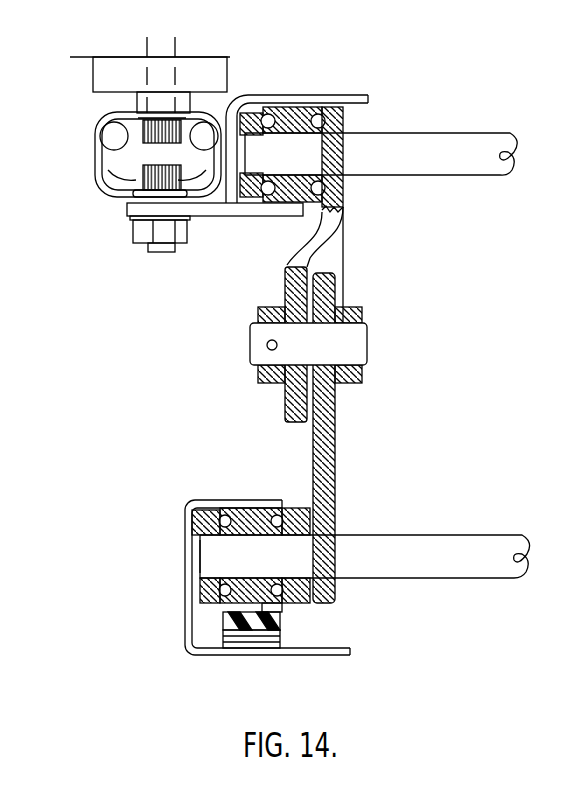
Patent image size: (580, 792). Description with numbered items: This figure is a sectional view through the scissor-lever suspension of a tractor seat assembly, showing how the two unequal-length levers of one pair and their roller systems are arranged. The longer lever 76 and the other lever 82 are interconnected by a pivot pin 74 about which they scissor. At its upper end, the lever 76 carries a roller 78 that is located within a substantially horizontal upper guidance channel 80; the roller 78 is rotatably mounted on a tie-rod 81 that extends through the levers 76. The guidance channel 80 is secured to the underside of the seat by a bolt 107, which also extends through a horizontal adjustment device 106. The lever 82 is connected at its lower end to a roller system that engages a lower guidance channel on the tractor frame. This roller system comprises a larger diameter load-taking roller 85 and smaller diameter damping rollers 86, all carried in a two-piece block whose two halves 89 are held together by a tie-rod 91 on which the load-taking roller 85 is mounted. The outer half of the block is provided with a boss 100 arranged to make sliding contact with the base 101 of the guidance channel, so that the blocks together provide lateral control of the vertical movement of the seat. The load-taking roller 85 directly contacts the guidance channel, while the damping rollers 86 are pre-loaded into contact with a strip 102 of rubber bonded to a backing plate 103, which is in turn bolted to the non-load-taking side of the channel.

The pivot pin 74 is at (348, 350).
The longer lever 76 is at (293, 290).
The roller 78 is at (293, 105).
The upper guidance channel 80 is at (273, 97).
The tie-rod 81 is at (413, 163).
The lever 82 is at (322, 470).
The load-taking roller 85 is at (243, 512).
The damping roller 86 is at (272, 608).
The block half 89 is at (195, 512).
The tie-rod 91 is at (443, 568).
The boss 100 is at (195, 582).
The base of guidance channel 101 is at (193, 567).
The strip of rubber 102 is at (223, 631).
The backing plate 103 is at (242, 637).
The horizontal adjustment device 106 is at (110, 173).
The bolt 107 is at (143, 223).